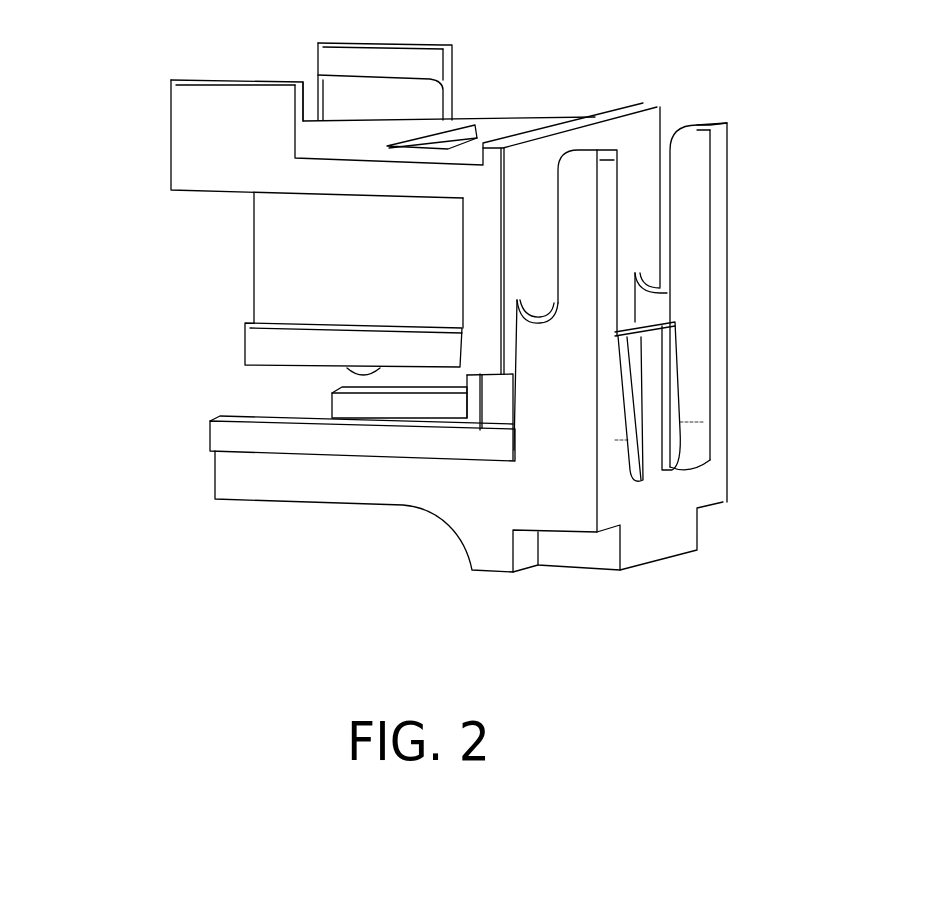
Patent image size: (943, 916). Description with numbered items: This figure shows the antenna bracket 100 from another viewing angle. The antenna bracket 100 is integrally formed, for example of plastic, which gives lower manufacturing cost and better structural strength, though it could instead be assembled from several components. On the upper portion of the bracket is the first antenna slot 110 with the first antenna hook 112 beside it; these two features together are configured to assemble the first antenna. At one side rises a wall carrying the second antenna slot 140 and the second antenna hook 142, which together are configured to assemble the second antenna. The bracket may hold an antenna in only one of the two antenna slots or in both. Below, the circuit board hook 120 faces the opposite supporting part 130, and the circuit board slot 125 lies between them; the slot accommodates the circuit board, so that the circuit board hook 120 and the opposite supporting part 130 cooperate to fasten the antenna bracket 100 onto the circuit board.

The antenna bracket 100 is at (74, 625).
The first antenna slot 110 is at (460, 102).
The first antenna hook 112 is at (480, 132).
The circuit board hook 120 is at (345, 378).
The circuit board slot 125 is at (303, 402).
The opposite supporting part 130 is at (273, 482).
The second antenna slot 140 is at (648, 173).
The second antenna hook 142 is at (653, 353).